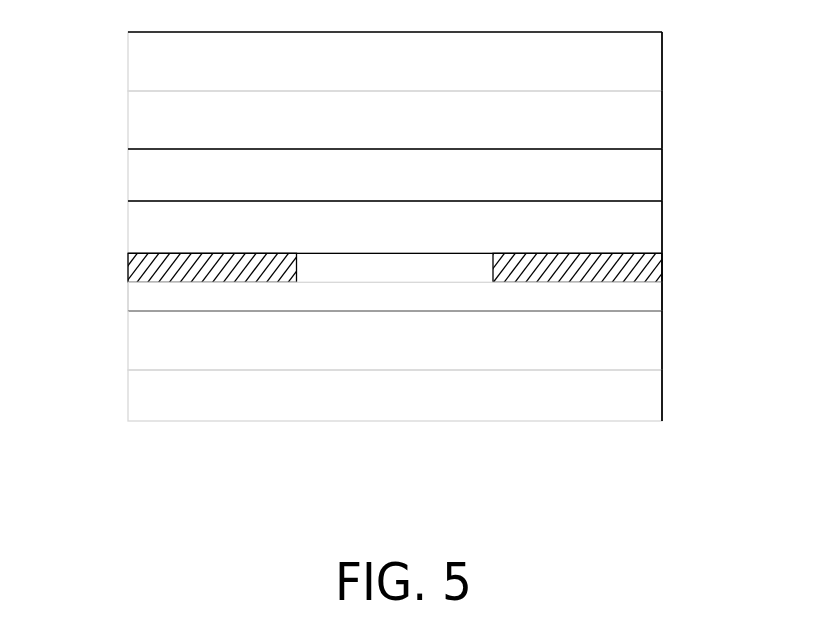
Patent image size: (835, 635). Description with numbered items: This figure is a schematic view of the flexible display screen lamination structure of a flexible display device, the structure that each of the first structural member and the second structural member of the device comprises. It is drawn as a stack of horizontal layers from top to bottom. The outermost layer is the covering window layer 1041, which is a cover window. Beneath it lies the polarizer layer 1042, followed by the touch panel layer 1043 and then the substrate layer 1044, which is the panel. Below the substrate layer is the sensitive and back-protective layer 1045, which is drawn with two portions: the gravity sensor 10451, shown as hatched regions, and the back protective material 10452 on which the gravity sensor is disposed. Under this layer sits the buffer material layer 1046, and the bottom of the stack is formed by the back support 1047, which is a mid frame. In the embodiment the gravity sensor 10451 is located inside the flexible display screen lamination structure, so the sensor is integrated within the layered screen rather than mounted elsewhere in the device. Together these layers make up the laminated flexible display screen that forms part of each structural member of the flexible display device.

The covering window layer 1041 is at (662, 62).
The polarizer layer 1042 is at (658, 127).
The touch panel layer 1043 is at (658, 183).
The substrate layer 1044 is at (658, 237).
The sensitive and back-protective layer 1045 is at (403, 257).
The gravity sensor 10451 is at (139, 268).
The back protective material 10452 is at (138, 297).
The buffer material layer 1046 is at (658, 352).
The back support 1047 is at (658, 402).